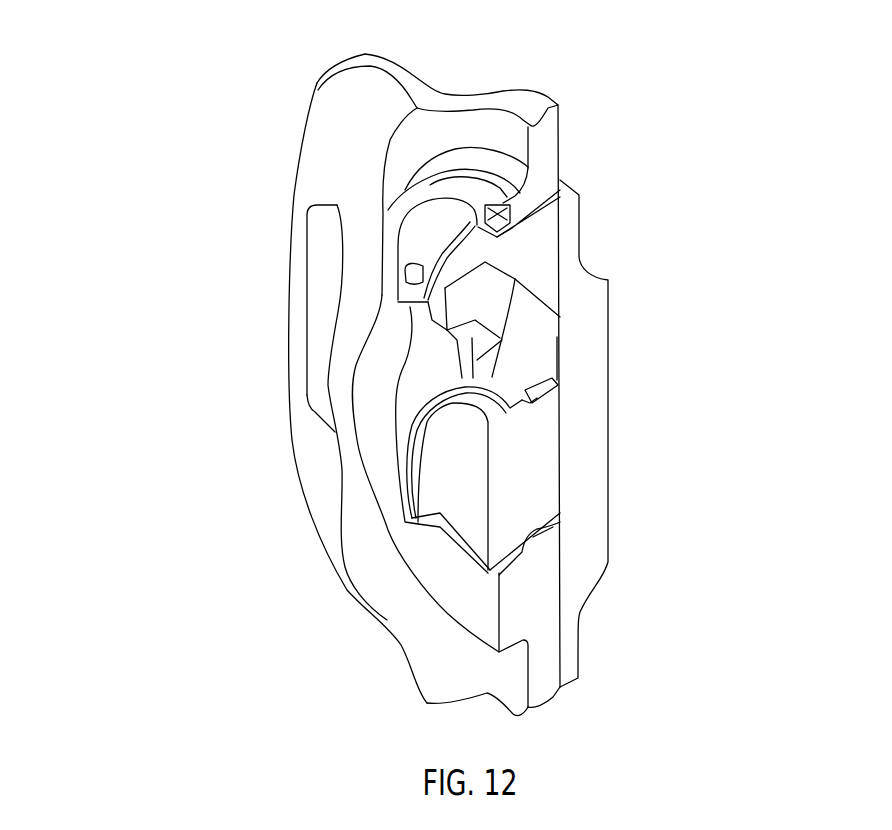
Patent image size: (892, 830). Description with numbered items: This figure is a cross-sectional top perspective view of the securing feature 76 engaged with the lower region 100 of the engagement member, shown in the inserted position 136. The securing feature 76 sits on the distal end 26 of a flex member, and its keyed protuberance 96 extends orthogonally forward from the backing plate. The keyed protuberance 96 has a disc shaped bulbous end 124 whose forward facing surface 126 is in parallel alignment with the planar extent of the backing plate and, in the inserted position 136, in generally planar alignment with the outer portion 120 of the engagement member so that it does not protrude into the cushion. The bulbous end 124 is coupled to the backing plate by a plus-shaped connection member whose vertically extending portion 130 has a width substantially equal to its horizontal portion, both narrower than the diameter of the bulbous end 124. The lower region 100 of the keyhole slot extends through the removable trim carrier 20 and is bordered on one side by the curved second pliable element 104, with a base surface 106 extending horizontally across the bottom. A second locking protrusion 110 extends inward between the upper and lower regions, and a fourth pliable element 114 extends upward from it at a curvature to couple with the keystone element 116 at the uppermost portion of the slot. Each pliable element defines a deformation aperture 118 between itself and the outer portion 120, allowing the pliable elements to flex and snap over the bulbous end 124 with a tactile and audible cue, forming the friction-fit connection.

The removable trim carrier 20 is at (413, 150).
The distal end 26 is at (342, 100).
The securing feature 76 is at (290, 116).
The keyed protuberance 96 is at (400, 410).
The lower region 100 is at (545, 332).
The second pliable element 104 is at (447, 377).
The base surface 106 is at (538, 538).
The second locking protrusion 110 is at (467, 307).
The fourth pliable element 114 is at (438, 245).
The keystone element 116 is at (488, 210).
The deformation aperture 118 is at (417, 213).
The outer portion 120 is at (460, 598).
The bulbous end 124 is at (447, 458).
The forward facing surface 126 is at (462, 511).
The vertically extending portion 130 is at (540, 383).
The inserted position 136 is at (160, 197).